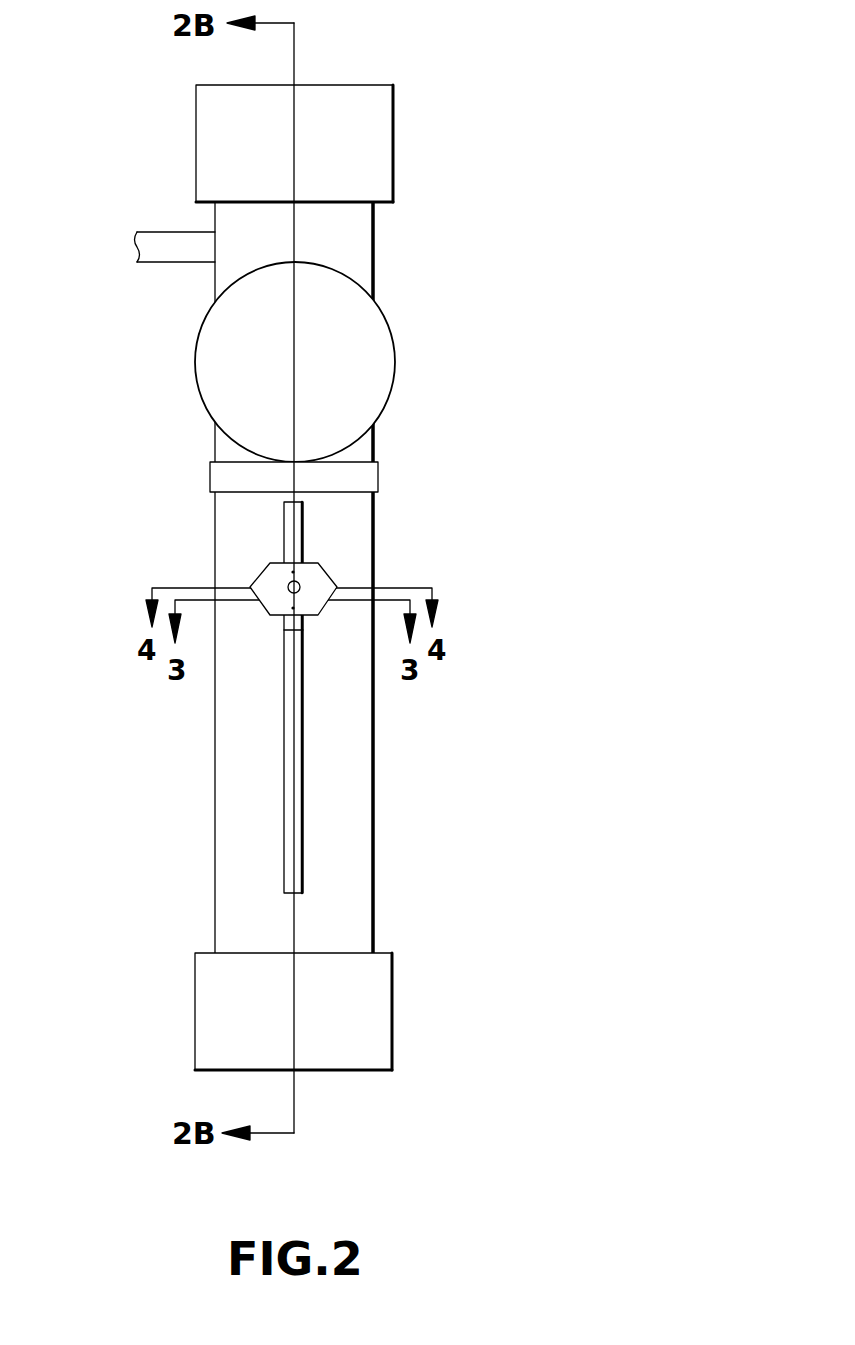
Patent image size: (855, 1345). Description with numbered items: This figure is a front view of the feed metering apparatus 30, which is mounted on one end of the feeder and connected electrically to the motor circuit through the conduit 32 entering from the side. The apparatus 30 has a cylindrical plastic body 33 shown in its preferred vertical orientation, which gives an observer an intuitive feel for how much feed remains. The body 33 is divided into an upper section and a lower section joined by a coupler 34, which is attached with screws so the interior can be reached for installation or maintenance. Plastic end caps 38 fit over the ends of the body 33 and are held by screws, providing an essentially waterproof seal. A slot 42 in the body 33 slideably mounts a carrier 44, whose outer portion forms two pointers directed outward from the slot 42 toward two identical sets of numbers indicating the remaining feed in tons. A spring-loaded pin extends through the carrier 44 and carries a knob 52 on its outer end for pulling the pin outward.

The feed metering apparatus 30 is at (436, 711).
The conduit 32 is at (161, 206).
The body 33 is at (411, 832).
The coupler 34 is at (413, 479).
The end caps 38 is at (425, 127).
The slot 42 is at (290, 753).
The carrier 44 is at (275, 571).
The knob 52 is at (300, 586).